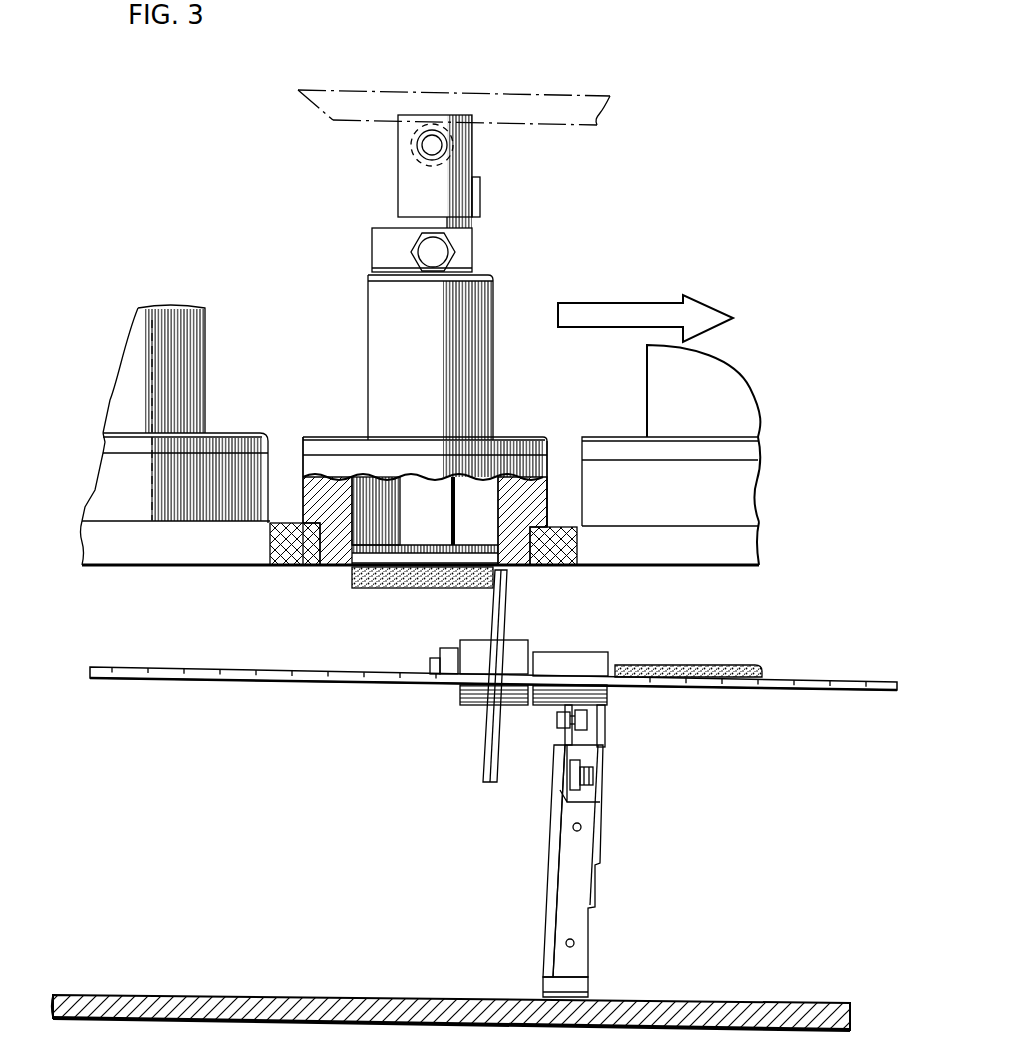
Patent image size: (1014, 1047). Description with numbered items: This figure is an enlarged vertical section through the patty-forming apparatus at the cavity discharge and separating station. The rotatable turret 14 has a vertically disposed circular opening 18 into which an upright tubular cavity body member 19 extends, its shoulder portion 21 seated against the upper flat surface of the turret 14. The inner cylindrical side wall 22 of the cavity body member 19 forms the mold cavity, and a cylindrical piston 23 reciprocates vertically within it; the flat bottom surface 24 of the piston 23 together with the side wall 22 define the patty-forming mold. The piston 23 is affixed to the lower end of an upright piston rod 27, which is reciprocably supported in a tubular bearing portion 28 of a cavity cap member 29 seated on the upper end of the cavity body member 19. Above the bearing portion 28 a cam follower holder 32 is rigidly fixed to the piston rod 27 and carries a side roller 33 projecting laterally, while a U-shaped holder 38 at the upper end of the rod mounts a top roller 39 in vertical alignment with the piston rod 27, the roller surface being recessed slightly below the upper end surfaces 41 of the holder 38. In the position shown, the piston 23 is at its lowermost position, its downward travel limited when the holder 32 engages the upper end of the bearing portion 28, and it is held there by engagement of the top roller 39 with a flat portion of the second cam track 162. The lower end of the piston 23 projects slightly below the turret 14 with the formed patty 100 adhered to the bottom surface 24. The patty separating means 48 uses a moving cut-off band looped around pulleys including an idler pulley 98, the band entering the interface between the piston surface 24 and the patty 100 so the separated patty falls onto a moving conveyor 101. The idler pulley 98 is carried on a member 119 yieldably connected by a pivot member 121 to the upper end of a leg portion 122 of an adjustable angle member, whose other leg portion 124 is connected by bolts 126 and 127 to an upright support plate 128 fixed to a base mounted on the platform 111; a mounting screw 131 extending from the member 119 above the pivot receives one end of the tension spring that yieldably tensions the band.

The rotatable turret 14 is at (740, 545).
The circular opening 18 is at (530, 527).
The cavity body member 19 is at (108, 492).
The shoulder portion 21 is at (297, 537).
The inner cylindrical side wall 22 is at (493, 493).
The piston 23 is at (367, 562).
The bottom surface 24 is at (463, 578).
The piston rod 27 is at (432, 475).
The tubular bearing portion 28 is at (193, 357).
The cavity cap member 29 is at (318, 433).
The cam follower holder 32 is at (380, 248).
The side roller 33 is at (463, 257).
The U-shaped holder 38 is at (482, 196).
The top roller 39 is at (478, 153).
The upper end surfaces 41 is at (466, 118).
The patty separating means 48 is at (545, 633).
The idler pulley 98 is at (507, 612).
The formed patty 100 is at (670, 665).
The conveyor 101 is at (767, 680).
The platform 111 is at (722, 1000).
The member 119 is at (567, 741).
The pivot member 121 is at (585, 776).
The leg portion 122 is at (553, 872).
The leg portion 124 is at (590, 795).
The bolt 126 is at (581, 827).
The bolt 127 is at (574, 943).
The upright support plate 128 is at (578, 928).
The mounting screw 131 is at (587, 722).
The flat portion of second cam track 162 is at (553, 106).